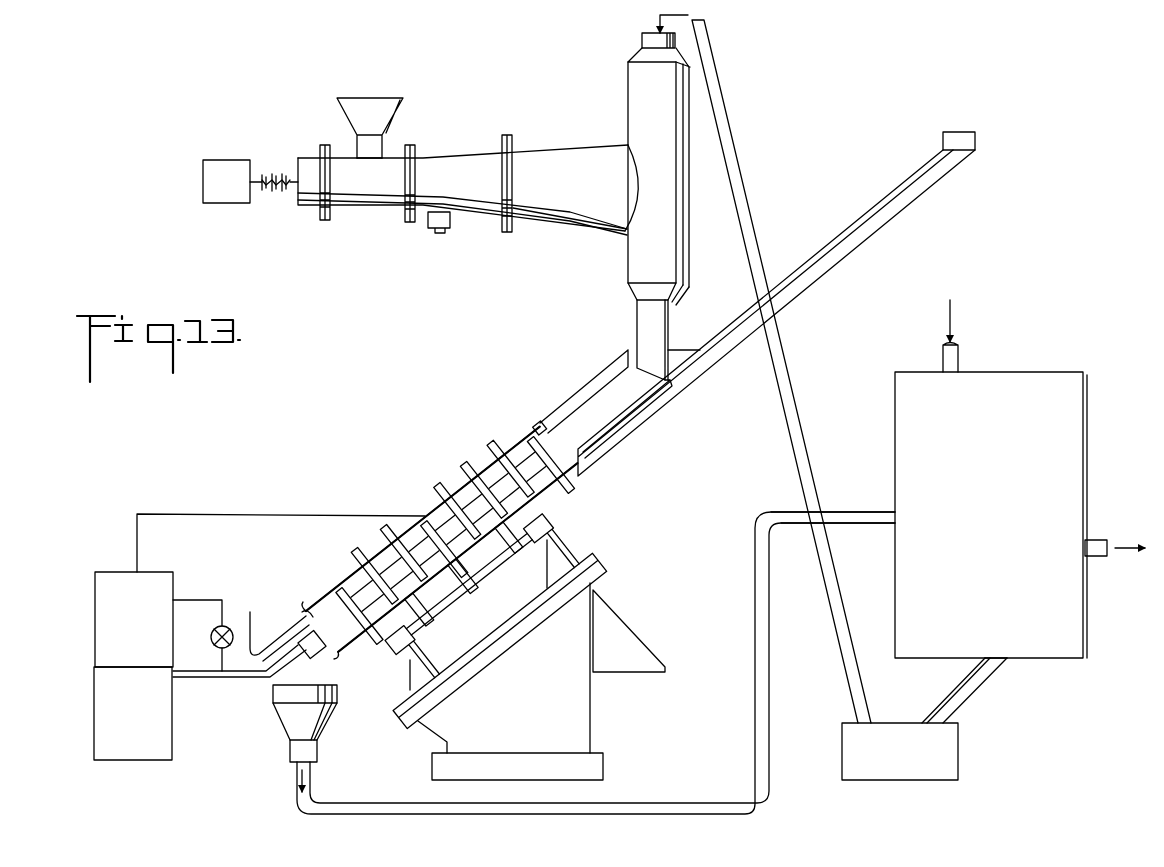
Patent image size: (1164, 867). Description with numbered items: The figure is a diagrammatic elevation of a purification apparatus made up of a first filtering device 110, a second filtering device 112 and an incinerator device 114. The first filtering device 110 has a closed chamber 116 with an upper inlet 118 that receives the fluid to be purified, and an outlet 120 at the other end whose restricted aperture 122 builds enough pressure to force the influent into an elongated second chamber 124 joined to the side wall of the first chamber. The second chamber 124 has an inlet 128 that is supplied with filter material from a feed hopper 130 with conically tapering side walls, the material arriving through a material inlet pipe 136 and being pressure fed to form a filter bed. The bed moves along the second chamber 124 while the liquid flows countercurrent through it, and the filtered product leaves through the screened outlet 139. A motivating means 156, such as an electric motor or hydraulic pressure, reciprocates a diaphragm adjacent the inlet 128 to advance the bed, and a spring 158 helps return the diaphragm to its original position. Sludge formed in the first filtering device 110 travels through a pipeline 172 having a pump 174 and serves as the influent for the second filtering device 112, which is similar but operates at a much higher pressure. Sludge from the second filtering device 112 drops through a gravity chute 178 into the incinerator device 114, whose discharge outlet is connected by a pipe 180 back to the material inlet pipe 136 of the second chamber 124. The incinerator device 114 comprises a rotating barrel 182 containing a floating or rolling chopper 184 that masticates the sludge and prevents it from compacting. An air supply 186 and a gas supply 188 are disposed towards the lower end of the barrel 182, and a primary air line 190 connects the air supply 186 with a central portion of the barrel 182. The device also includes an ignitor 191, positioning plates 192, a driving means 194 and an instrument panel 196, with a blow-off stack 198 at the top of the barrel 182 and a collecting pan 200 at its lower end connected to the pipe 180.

The first filtering device 110 is at (1092, 478).
The second filtering device 112 is at (550, 103).
The incinerator device 114 is at (445, 465).
The closed chamber 116 is at (632, 100).
The upper inlet 118 is at (640, 38).
The outlet 120 is at (988, 667).
The restricted aperture 122 is at (635, 292).
The second chamber 124 is at (537, 220).
The inlet 128 is at (362, 153).
The feed hopper 130 is at (390, 104).
The material inlet pipe 136 is at (894, 512).
The outlet 139 is at (430, 231).
The motivating means 156 is at (205, 186).
The spring 158 is at (278, 195).
The pipeline 172 is at (856, 684).
The pump 174 is at (950, 758).
The gravity chute 178 is at (614, 364).
The pipe 180 is at (413, 803).
The rotating barrel 182 is at (557, 488).
The floating or rolling chopper 184 is at (498, 458).
The air supply 186 is at (100, 600).
The gas supply 188 is at (96, 703).
The primary air line 190 is at (262, 512).
The ignitor 191 is at (275, 640).
The positioning plates 192 is at (557, 525).
The driving means 194 is at (492, 642).
The instrument panel 196 is at (653, 648).
The blow-off stack 198 is at (843, 257).
The collecting pan 200 is at (288, 735).